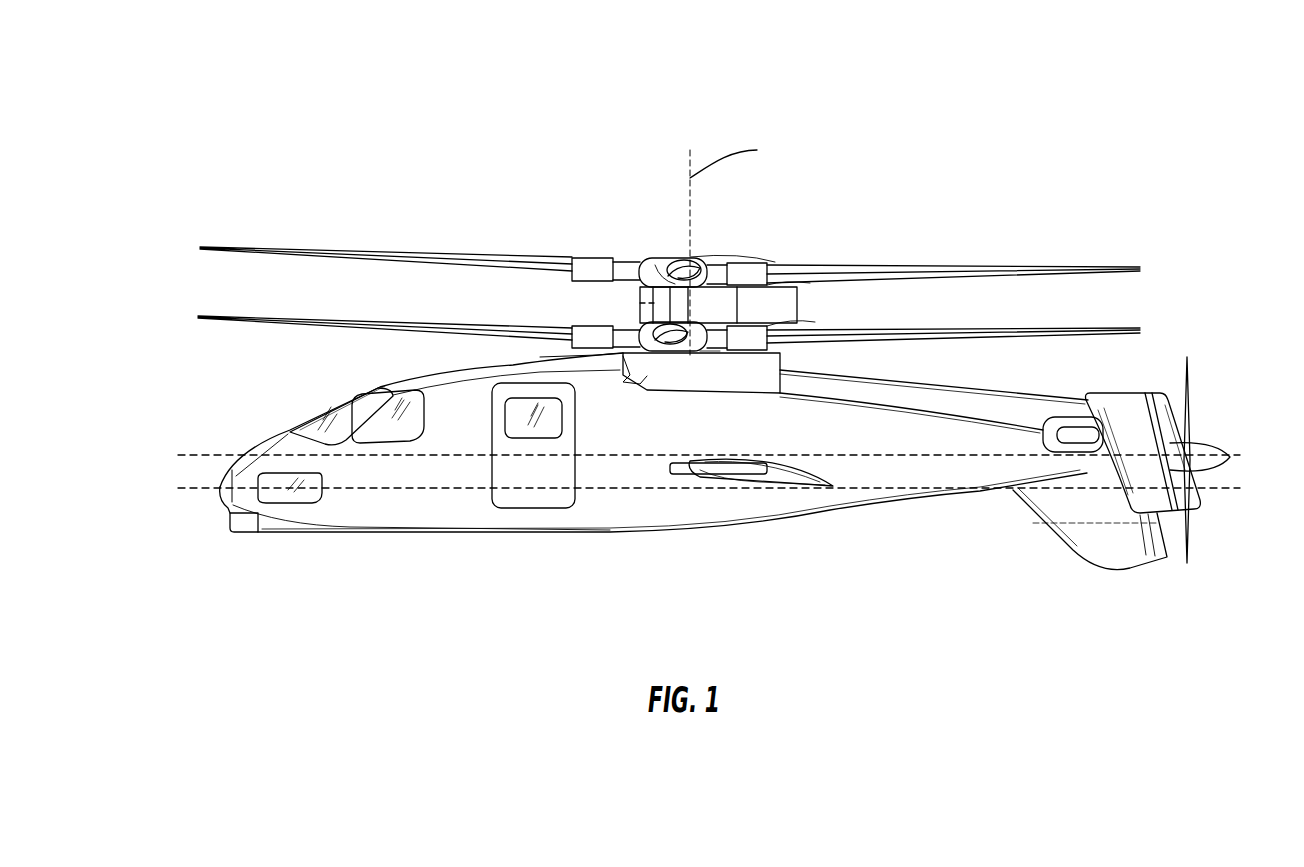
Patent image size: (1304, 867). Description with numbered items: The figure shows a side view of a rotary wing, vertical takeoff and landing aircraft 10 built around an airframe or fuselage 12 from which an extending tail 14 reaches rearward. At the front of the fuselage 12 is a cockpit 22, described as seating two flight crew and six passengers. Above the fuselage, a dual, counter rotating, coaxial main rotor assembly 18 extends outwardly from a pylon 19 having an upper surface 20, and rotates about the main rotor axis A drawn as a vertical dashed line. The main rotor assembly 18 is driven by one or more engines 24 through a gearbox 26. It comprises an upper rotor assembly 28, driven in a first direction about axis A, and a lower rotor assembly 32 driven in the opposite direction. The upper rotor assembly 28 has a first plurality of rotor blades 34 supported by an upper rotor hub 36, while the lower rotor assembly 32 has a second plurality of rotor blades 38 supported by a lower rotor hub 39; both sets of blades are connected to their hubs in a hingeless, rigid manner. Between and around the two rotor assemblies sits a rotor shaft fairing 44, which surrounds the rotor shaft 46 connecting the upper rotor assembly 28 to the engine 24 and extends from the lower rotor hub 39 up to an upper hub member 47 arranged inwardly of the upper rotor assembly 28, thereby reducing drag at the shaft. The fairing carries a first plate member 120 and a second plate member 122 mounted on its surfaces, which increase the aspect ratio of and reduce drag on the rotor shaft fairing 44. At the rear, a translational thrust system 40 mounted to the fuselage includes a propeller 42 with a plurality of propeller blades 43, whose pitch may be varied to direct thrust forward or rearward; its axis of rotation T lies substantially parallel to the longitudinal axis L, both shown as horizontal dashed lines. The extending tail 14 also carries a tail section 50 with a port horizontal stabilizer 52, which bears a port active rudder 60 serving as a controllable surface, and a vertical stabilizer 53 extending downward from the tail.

The rotary wing aircraft 10 is at (398, 180).
The fuselage 12 is at (537, 515).
The extending tail 14 is at (820, 505).
The main rotor assembly 18 is at (660, 215).
The pylon 19 is at (710, 362).
The upper surface 20 is at (815, 338).
The cockpit 22 is at (302, 433).
The engine 24 is at (755, 373).
The gearbox 26 is at (663, 372).
The upper rotor assembly 28 is at (297, 243).
The lower rotor assembly 32 is at (275, 345).
The first plurality of rotor blades 34 is at (970, 265).
The upper rotor hub 36 is at (690, 262).
The second plurality of rotor blades 38 is at (1065, 330).
The lower rotor hub 39 is at (770, 345).
The translational thrust system 40 is at (1185, 600).
The propeller 42 is at (1192, 392).
The propeller blades 43 is at (1185, 538).
The rotor shaft fairing 44 is at (783, 310).
The rotor shaft 46 is at (640, 303).
The upper hub member 47 is at (773, 268).
The tail section 50 is at (1138, 382).
The port horizontal stabilizer 52 is at (1085, 437).
The vertical stabilizer 53 is at (1075, 550).
The port active rudder 60 is at (1172, 440).
The first plate member 120 is at (805, 325).
The second plate member 122 is at (803, 280).